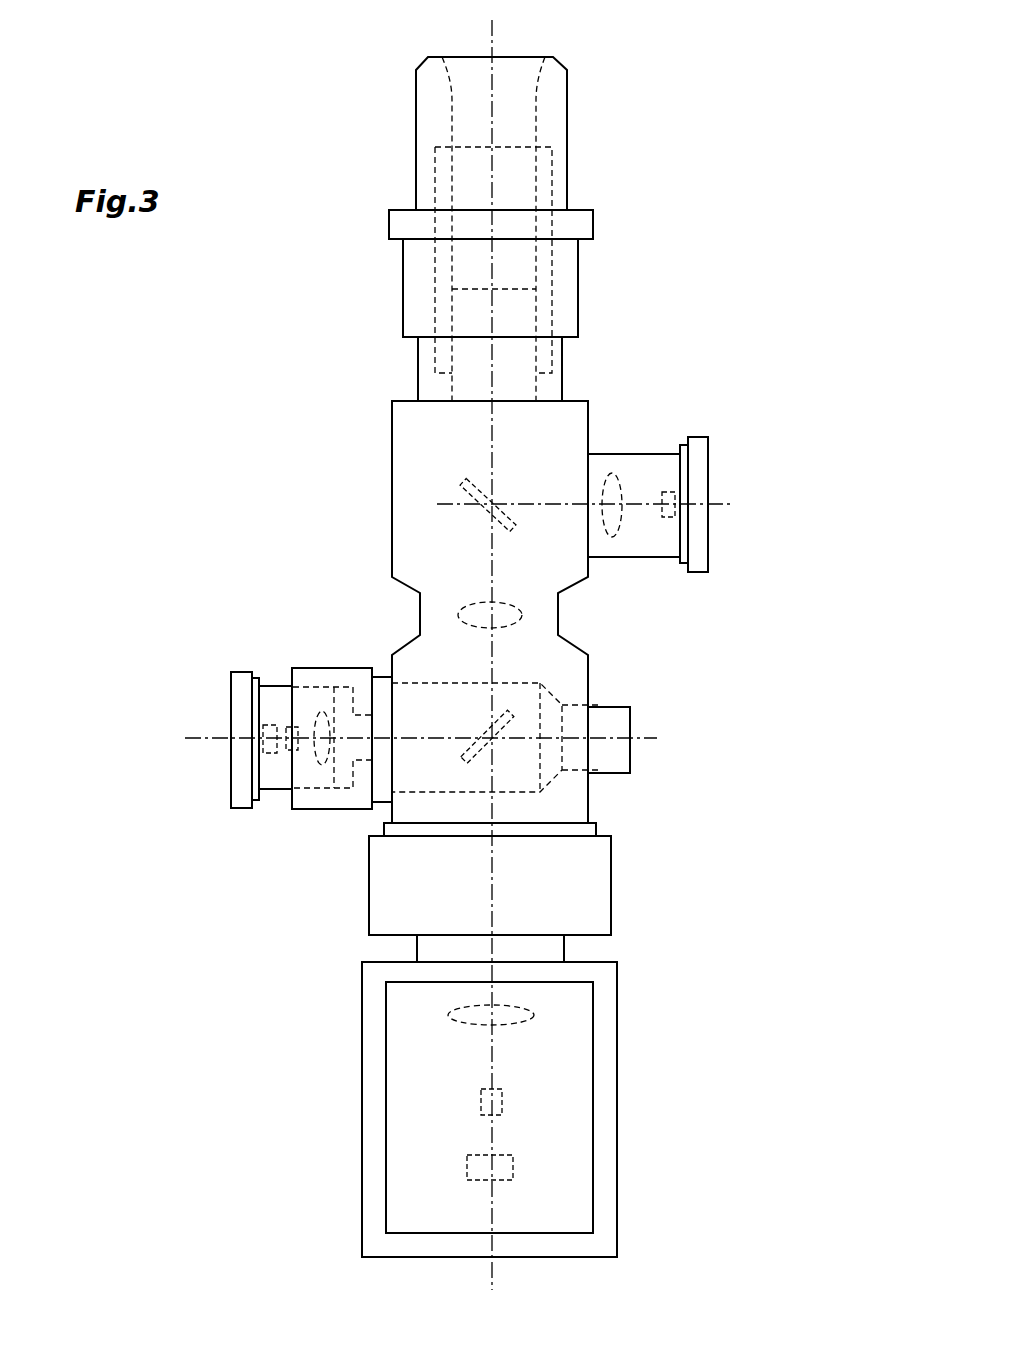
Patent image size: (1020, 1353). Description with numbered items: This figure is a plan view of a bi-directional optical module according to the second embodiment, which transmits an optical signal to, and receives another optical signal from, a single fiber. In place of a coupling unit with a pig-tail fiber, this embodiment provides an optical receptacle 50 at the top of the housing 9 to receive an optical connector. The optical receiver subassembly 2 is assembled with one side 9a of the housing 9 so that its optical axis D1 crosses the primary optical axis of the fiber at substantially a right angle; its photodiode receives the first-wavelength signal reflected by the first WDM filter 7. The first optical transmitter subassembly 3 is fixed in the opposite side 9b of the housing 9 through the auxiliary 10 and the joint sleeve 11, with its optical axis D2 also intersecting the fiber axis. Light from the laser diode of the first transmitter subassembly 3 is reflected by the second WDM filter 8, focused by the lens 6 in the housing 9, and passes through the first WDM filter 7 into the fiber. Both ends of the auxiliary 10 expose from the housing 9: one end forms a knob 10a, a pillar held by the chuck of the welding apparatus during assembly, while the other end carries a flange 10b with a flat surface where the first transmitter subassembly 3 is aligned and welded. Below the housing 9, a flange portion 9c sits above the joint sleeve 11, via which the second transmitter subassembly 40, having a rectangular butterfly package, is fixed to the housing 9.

The optical receptacle 50 is at (583, 198).
The housing 9 is at (380, 465).
The one side of the housing 9a is at (590, 567).
The side of the housing 9b is at (385, 818).
The flange of housing 9c is at (572, 823).
The optical receiver subassembly 2 is at (637, 447).
The first optical transmitter subassembly 3 is at (255, 660).
The first WDM filter 7 is at (463, 482).
The lens 6 is at (513, 605).
The second WDM filter 8 is at (510, 690).
The auxiliary 10 is at (618, 703).
The knob 10a is at (620, 717).
The flange 10b is at (381, 690).
The joint sleeve 11 is at (620, 927).
The second transmitter subassembly 40 is at (623, 1068).
The optical axis of the optical receiver subassembly D1 is at (726, 502).
The optical axis of the first transmitter subassembly D2 is at (640, 741).